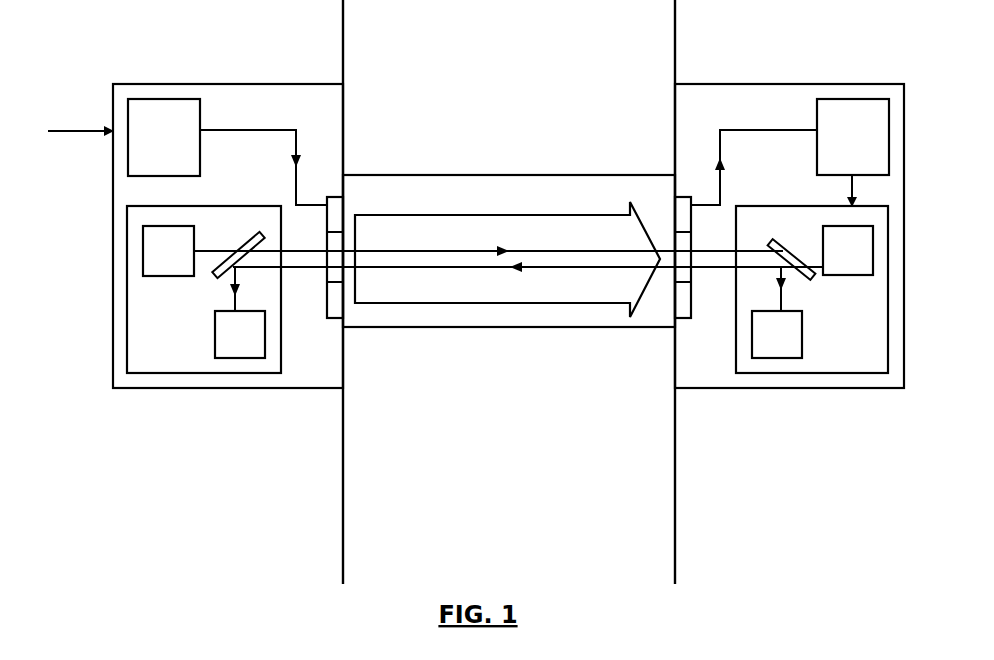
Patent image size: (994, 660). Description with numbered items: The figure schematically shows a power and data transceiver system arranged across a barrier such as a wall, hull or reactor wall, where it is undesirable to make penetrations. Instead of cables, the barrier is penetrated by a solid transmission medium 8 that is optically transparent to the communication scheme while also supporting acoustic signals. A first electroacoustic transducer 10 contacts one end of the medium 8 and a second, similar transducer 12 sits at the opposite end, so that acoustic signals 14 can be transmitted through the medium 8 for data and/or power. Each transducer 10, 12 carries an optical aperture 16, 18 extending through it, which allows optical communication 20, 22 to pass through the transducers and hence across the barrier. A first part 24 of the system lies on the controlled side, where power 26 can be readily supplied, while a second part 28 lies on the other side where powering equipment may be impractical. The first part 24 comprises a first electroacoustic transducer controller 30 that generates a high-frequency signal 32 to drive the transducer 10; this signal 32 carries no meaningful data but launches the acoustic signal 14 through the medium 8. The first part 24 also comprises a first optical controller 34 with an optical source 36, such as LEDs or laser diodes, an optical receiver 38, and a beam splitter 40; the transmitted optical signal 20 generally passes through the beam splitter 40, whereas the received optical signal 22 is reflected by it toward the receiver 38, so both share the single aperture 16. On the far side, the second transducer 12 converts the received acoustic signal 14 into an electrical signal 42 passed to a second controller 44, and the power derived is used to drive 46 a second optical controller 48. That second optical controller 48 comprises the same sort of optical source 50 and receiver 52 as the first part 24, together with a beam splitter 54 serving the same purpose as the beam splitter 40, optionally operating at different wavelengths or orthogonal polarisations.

The solid transmission medium 8 is at (509, 251).
The first electroacoustic transducer 10 is at (328, 212).
The second electroacoustic transducer 12 is at (678, 212).
The acoustic signal 14 is at (507, 259).
The optical aperture 16 is at (333, 277).
The optical aperture 18 is at (688, 277).
The transmitted optical signal 20 is at (476, 251).
The received optical signal 22 is at (478, 267).
The first part 24 is at (227, 81).
The power 26 is at (87, 128).
The second part 28 is at (787, 81).
The first electroacoustic transducer controller 30 is at (164, 137).
The signal 32 is at (291, 180).
The first optical controller 34 is at (204, 289).
The optical source 36 is at (168, 251).
The optical receiver 38 is at (240, 312).
The beam splitter 40 is at (250, 240).
The electrical signal 42 is at (744, 125).
The second controller 44 is at (853, 137).
The drive 46 is at (841, 193).
The second optical controller 48 is at (812, 289).
The optical source 50 is at (848, 250).
The optical receiver 52 is at (777, 312).
The beam splitter 54 is at (777, 240).